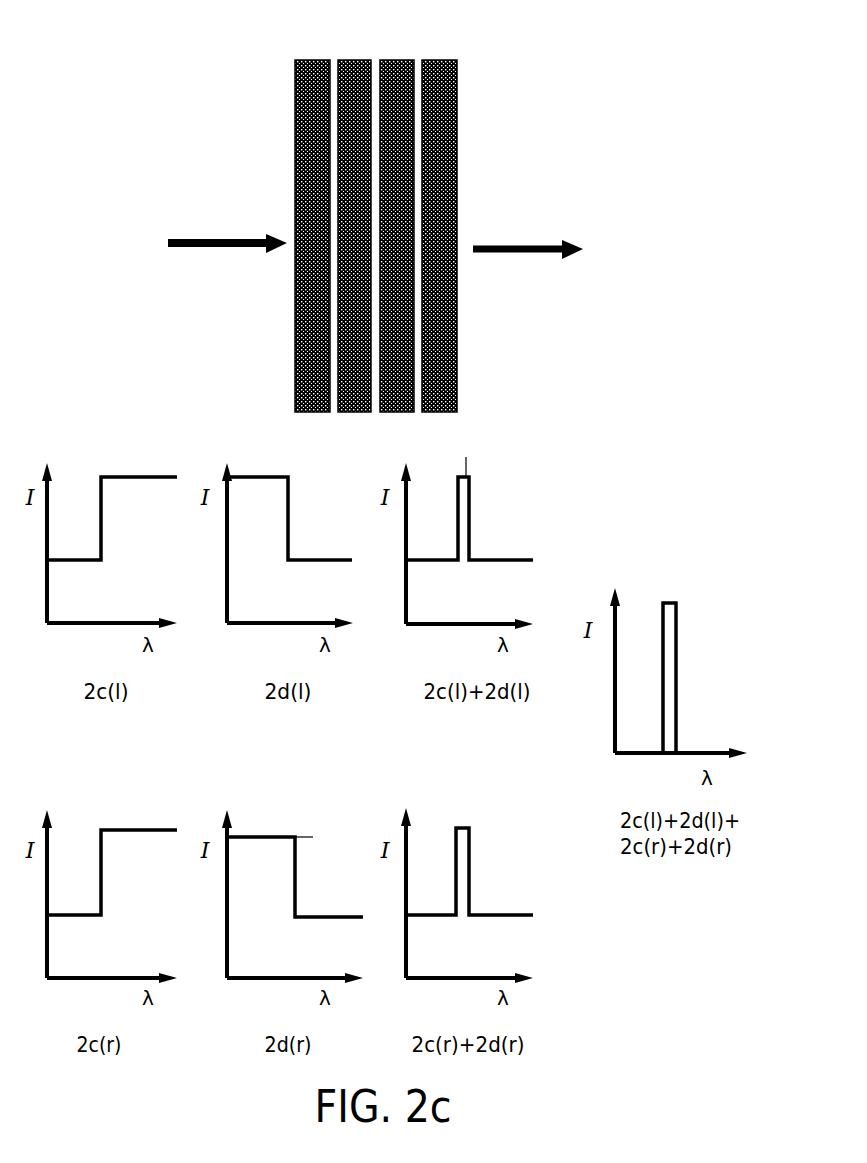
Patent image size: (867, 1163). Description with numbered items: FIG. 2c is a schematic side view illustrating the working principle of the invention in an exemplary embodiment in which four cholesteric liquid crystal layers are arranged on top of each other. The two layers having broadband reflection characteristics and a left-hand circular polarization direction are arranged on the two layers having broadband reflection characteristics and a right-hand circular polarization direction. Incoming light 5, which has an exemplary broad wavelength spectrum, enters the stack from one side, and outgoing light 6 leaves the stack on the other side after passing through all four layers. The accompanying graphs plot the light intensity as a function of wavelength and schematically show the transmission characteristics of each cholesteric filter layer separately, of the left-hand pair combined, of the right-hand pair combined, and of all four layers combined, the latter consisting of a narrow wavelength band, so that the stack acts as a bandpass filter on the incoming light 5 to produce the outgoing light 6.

The incoming light 5 is at (227, 257).
The outgoing light 6 is at (528, 262).